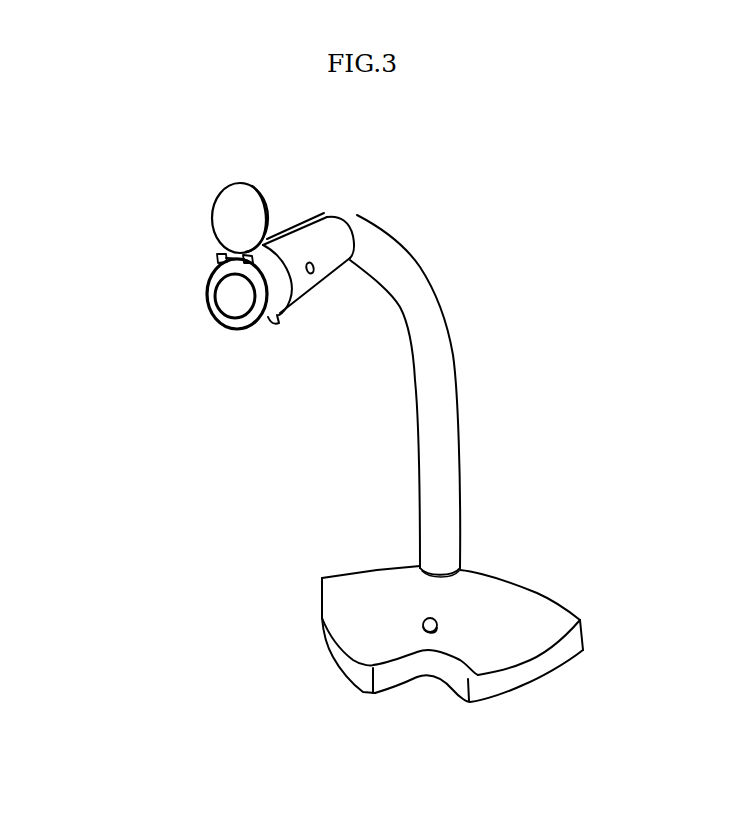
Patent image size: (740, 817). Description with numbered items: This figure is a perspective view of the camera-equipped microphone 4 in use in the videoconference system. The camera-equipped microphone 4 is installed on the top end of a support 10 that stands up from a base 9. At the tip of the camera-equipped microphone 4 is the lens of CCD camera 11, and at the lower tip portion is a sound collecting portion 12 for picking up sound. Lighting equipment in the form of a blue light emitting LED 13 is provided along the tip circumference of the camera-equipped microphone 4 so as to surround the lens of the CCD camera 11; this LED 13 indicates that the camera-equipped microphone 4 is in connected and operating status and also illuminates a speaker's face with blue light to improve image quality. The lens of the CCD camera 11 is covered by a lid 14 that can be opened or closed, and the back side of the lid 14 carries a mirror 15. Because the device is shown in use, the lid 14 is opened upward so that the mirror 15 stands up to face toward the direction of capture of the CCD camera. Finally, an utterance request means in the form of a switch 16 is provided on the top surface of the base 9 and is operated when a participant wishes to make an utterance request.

The camera-equipped microphone 4 is at (337, 242).
The base 9 is at (507, 607).
The support 10 is at (450, 398).
The lens of CCD camera 11 is at (227, 302).
The sound collecting portion 12 is at (273, 320).
The blue light emitting LED 13 is at (210, 285).
The lid 14 is at (266, 198).
The mirror 15 is at (215, 215).
The switch 16 is at (423, 623).